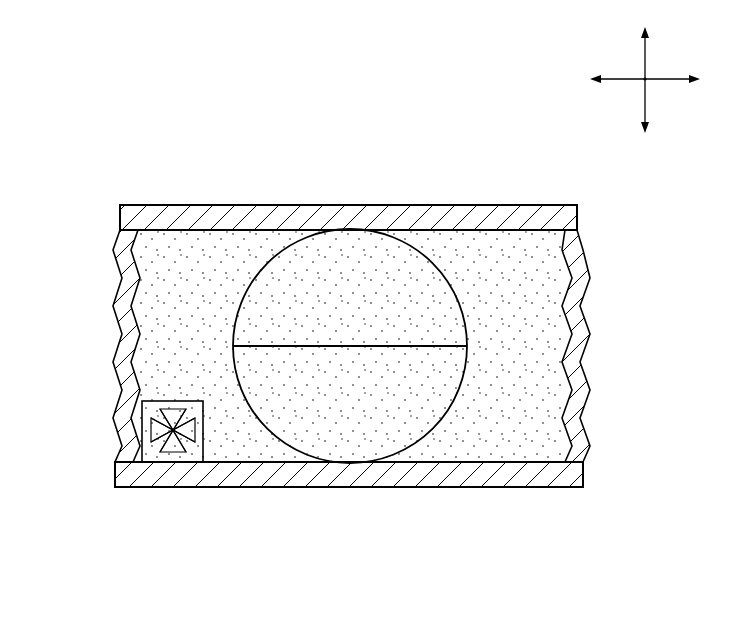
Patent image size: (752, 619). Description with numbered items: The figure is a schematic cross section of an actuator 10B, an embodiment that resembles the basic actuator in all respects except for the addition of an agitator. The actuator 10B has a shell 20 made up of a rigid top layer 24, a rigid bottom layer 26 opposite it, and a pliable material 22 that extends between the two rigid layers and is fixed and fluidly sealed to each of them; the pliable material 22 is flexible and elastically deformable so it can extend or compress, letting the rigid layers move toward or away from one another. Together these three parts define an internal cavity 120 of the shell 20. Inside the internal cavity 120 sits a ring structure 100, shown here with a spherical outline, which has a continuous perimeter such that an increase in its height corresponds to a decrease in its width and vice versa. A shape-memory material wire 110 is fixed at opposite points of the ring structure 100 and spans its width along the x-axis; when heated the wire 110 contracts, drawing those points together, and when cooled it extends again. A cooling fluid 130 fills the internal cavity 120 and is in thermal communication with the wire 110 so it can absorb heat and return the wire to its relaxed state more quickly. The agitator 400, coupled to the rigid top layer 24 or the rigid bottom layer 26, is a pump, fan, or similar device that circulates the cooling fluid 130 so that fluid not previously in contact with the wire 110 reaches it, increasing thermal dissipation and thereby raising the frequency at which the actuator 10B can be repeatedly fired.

The actuator 10B is at (111, 148).
The shell 20 is at (193, 188).
The pliable material 22 is at (118, 352).
The rigid top layer 24 is at (540, 222).
The rigid bottom layer 26 is at (540, 487).
The ring structure 100 is at (458, 392).
The shape-memory material wire 110 is at (375, 348).
The internal cavity 120 is at (528, 306).
The cooling fluid 130 is at (147, 360).
The agitator 400 is at (142, 425).